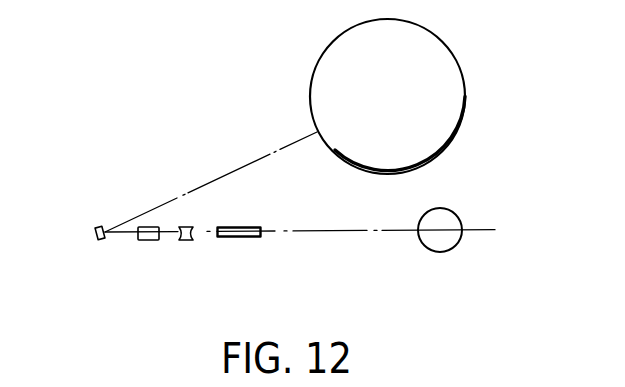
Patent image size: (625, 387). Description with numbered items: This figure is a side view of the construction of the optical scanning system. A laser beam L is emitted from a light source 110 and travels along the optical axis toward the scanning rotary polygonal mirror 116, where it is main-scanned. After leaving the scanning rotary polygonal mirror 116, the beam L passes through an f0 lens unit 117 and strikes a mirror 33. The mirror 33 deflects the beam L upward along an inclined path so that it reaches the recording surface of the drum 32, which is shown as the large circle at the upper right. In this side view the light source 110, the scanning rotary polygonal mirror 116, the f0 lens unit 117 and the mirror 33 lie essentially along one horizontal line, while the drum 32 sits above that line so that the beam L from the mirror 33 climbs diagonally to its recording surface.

The drum 32 is at (453, 102).
The mirror 33 is at (102, 241).
The f0 lens unit 117 is at (150, 242).
The scanning rotary polygonal mirror 116 is at (242, 239).
The light source 110 is at (439, 252).
The laser beam L is at (213, 178).